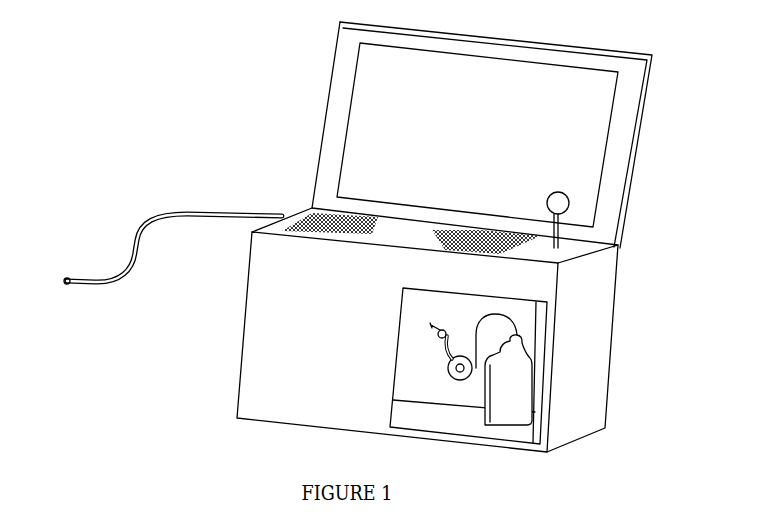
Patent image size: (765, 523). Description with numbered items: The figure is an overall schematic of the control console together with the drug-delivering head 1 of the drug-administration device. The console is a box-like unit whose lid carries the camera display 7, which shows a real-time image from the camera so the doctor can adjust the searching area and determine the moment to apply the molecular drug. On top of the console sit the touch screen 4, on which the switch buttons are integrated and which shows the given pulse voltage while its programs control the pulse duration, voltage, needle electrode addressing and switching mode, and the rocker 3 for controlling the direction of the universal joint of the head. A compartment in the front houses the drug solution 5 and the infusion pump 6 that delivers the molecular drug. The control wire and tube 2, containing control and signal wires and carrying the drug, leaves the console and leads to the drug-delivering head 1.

The drug-delivering head 1 is at (68, 284).
The control wire and tube 2 is at (142, 227).
The rocker for controlling the universal joint 3 is at (560, 202).
The touch screen 4 is at (380, 232).
The drug solution 5 is at (520, 363).
The infusion pump 6 is at (460, 368).
The camera display 7 is at (553, 92).